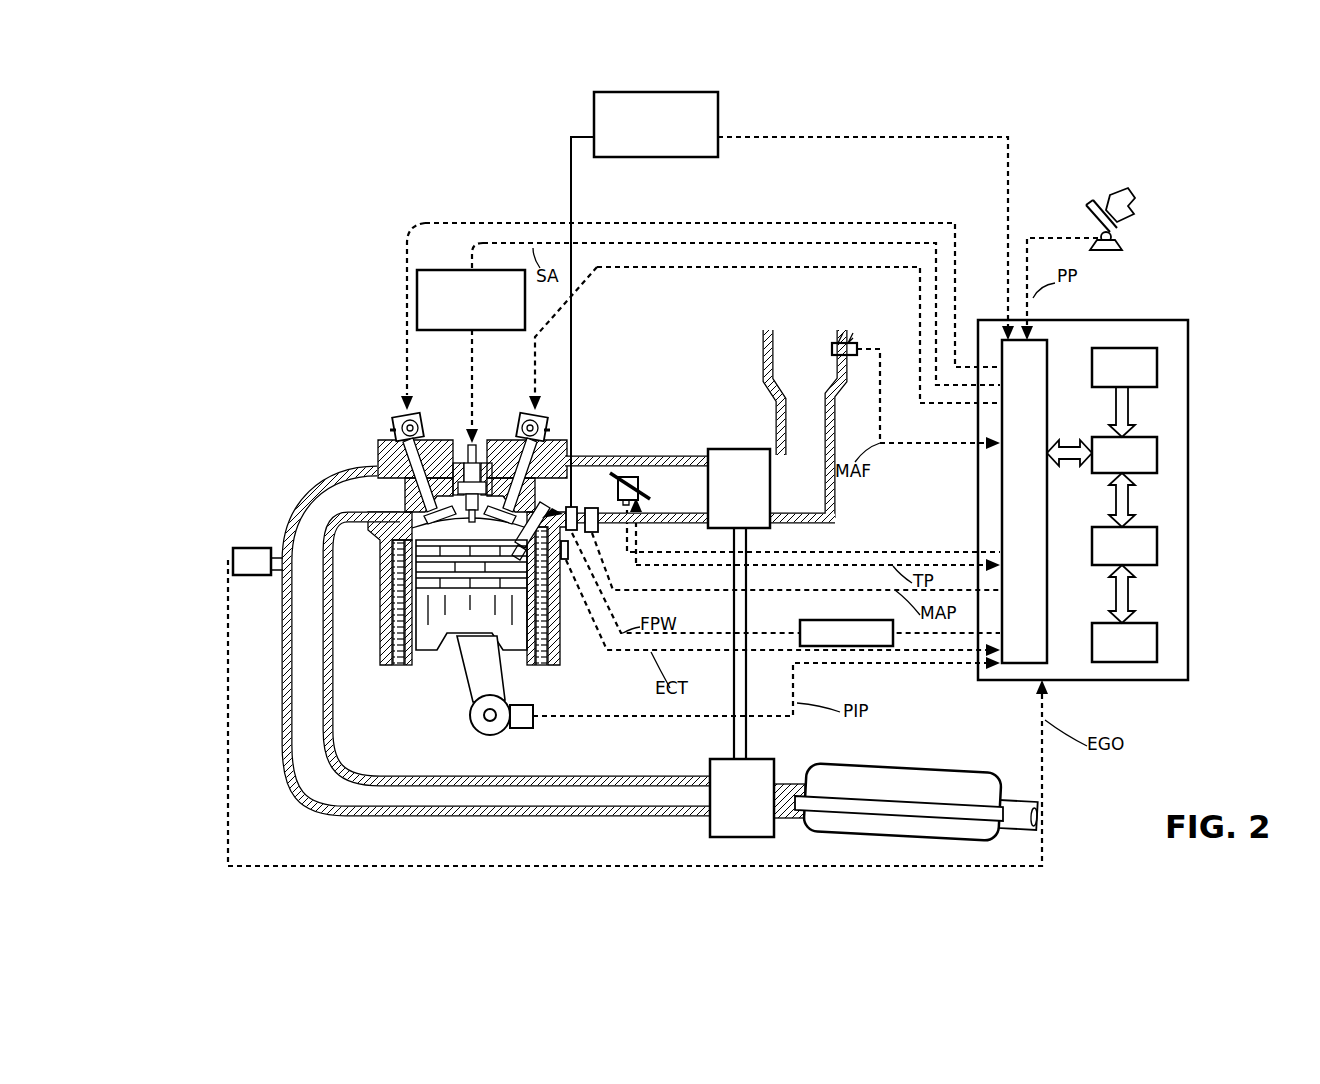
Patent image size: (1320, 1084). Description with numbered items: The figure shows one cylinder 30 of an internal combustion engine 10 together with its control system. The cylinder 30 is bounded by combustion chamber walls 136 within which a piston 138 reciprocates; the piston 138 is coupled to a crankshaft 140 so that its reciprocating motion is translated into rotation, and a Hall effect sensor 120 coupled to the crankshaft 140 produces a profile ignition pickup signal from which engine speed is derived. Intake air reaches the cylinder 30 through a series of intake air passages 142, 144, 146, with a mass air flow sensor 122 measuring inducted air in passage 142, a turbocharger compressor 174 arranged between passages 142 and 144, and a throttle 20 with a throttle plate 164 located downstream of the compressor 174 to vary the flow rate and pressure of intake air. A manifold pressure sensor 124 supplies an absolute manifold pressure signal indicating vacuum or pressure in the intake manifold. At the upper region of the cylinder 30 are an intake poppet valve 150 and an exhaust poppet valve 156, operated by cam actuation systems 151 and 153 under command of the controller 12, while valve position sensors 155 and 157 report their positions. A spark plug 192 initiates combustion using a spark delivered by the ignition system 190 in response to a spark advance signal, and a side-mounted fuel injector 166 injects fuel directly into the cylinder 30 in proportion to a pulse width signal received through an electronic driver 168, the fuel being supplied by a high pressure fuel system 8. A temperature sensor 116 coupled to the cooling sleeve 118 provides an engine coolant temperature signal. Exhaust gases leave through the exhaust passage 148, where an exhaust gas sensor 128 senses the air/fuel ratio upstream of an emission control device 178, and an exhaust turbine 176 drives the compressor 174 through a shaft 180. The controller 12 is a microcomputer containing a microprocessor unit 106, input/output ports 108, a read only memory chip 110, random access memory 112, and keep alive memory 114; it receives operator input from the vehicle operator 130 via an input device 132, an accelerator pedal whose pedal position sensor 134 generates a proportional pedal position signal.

The engine 10 is at (222, 168).
The high pressure fuel system 8 is at (718, 103).
The ignition system 190 is at (433, 270).
The controller 12 is at (1123, 485).
The input/output ports 108 is at (1050, 348).
The read only memory chip 110 is at (1158, 370).
The microprocessor unit 106 is at (1158, 455).
The random access memory 112 is at (1158, 548).
The keep alive memory 114 is at (1158, 645).
The vehicle operator 130 is at (1135, 205).
The input device 132 is at (1088, 218).
The pedal position sensor 134 is at (1118, 238).
The mass air flow sensor 122 is at (847, 343).
The intake air passage 142 is at (822, 372).
The compressor 174 is at (722, 448).
The throttle 20 is at (632, 478).
The throttle plate 164 is at (612, 476).
The intake air passage 144 is at (700, 500).
The intake air passage 146 is at (607, 500).
The valve position sensor 155 is at (566, 420).
The valve position sensor 157 is at (398, 425).
The exhaust poppet valve 156 is at (430, 508).
The intake poppet valve 150 is at (505, 500).
The cam actuation system 153 is at (418, 412).
The cam actuation system 151 is at (520, 410).
The spark plug 192 is at (466, 452).
The fuel injector 166 is at (548, 522).
The exhaust passage 148 is at (372, 506).
The cylinder 30 is at (382, 552).
The exhaust gas sensor 128 is at (233, 552).
The manifold pressure sensor 124 is at (598, 533).
The temperature sensor 116 is at (568, 560).
The cooling sleeve 118 is at (547, 625).
The combustion chamber walls 136 is at (410, 668).
The piston 138 is at (455, 622).
The crankshaft 140 is at (482, 735).
The Hall effect sensor 120 is at (527, 730).
The electronic driver 168 is at (802, 622).
The shaft 180 is at (748, 735).
The exhaust turbine 176 is at (710, 828).
The emission control device 178 is at (962, 778).